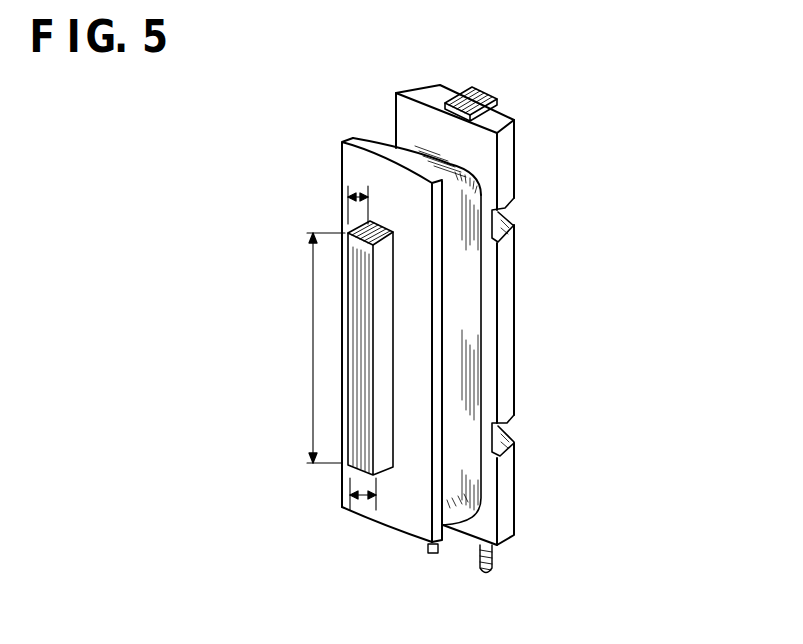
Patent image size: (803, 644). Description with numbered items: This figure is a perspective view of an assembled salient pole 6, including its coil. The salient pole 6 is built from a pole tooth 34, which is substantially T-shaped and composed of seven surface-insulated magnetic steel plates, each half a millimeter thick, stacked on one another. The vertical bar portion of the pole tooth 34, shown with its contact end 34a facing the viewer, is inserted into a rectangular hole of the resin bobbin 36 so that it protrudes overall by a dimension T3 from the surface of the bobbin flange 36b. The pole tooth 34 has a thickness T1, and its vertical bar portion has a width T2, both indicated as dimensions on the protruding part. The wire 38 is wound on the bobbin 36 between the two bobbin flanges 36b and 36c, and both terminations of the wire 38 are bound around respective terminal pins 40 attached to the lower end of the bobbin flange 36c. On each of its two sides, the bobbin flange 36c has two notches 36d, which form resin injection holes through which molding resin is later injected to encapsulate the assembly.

The salient pole 6 is at (566, 155).
The pole tooth 34 is at (497, 90).
The contact portion of terminal 34a is at (352, 407).
The resin bobbin 36 is at (521, 352).
The bobbin flange 36b is at (413, 523).
The bobbin flange 36c is at (500, 290).
The notch 36d is at (500, 222).
The wire 38 is at (395, 145).
The terminal pin 40 is at (434, 553).
The thickness of pole tooth T1 is at (348, 512).
The width of vertical bar portion T2 is at (313, 350).
The protrusion dimension T3 is at (348, 190).